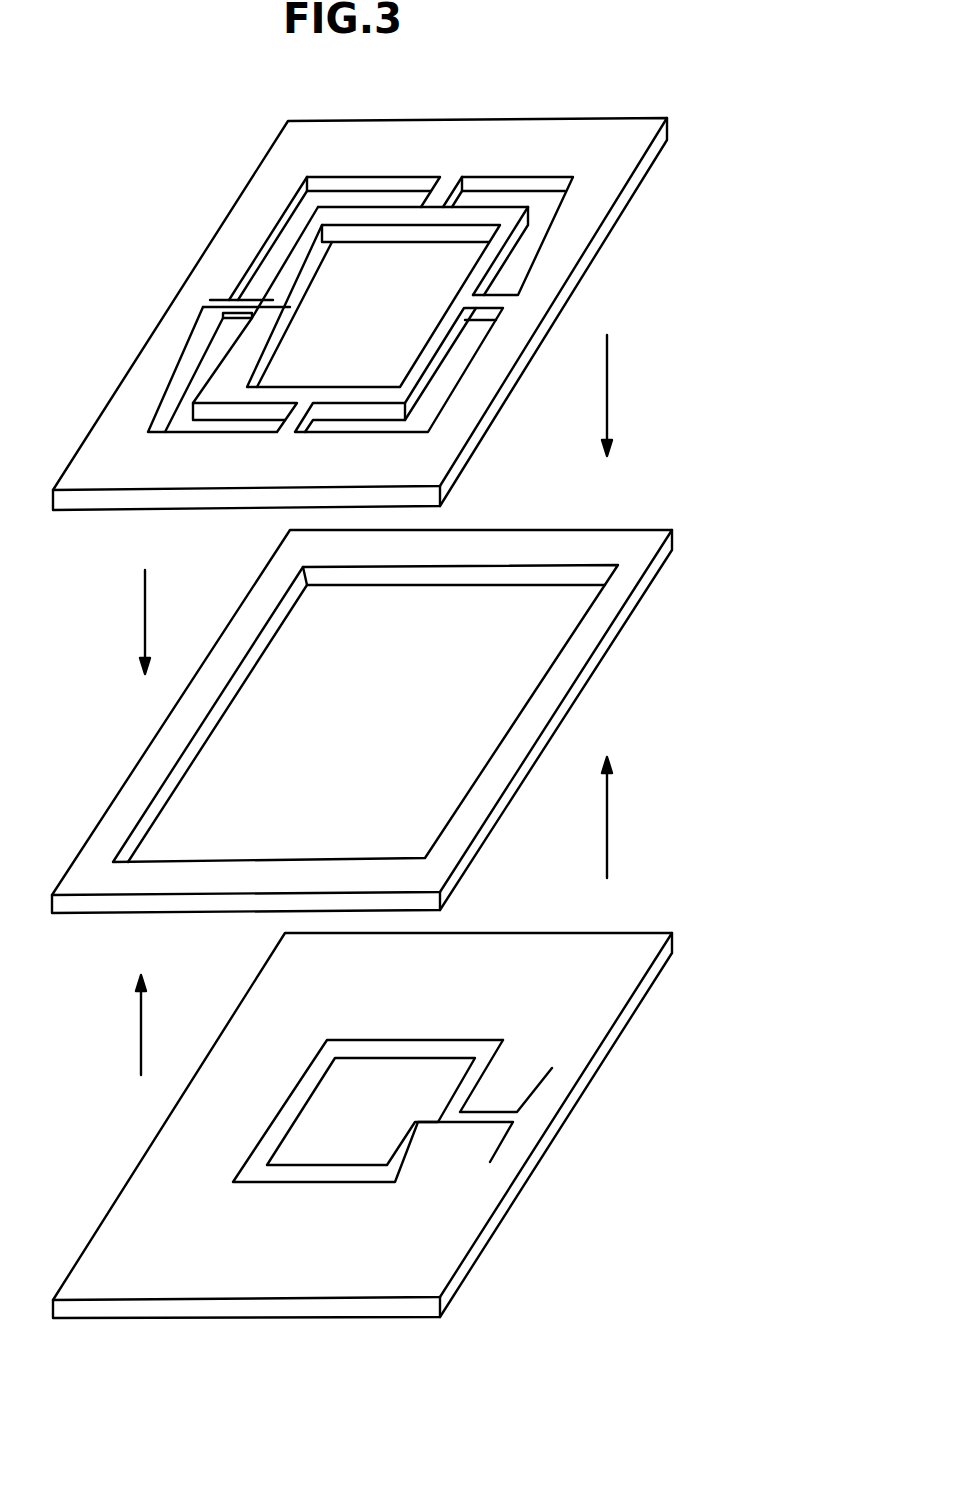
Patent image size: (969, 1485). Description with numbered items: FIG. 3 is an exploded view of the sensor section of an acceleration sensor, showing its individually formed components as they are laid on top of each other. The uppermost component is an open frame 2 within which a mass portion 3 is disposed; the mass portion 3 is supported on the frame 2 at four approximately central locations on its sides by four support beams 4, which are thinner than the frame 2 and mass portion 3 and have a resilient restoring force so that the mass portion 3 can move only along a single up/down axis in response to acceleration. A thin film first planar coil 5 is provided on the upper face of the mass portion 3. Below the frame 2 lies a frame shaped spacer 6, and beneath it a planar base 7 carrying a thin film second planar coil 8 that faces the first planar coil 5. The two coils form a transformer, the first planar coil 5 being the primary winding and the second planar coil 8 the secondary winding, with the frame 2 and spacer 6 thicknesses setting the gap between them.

The frame 2 is at (564, 127).
The mass portion 3 is at (533, 225).
The support beams 4 is at (437, 195).
The first planar coil 5 is at (345, 360).
The spacer 6 is at (570, 670).
The base 7 is at (617, 1010).
The second planar coil 8 is at (356, 1184).